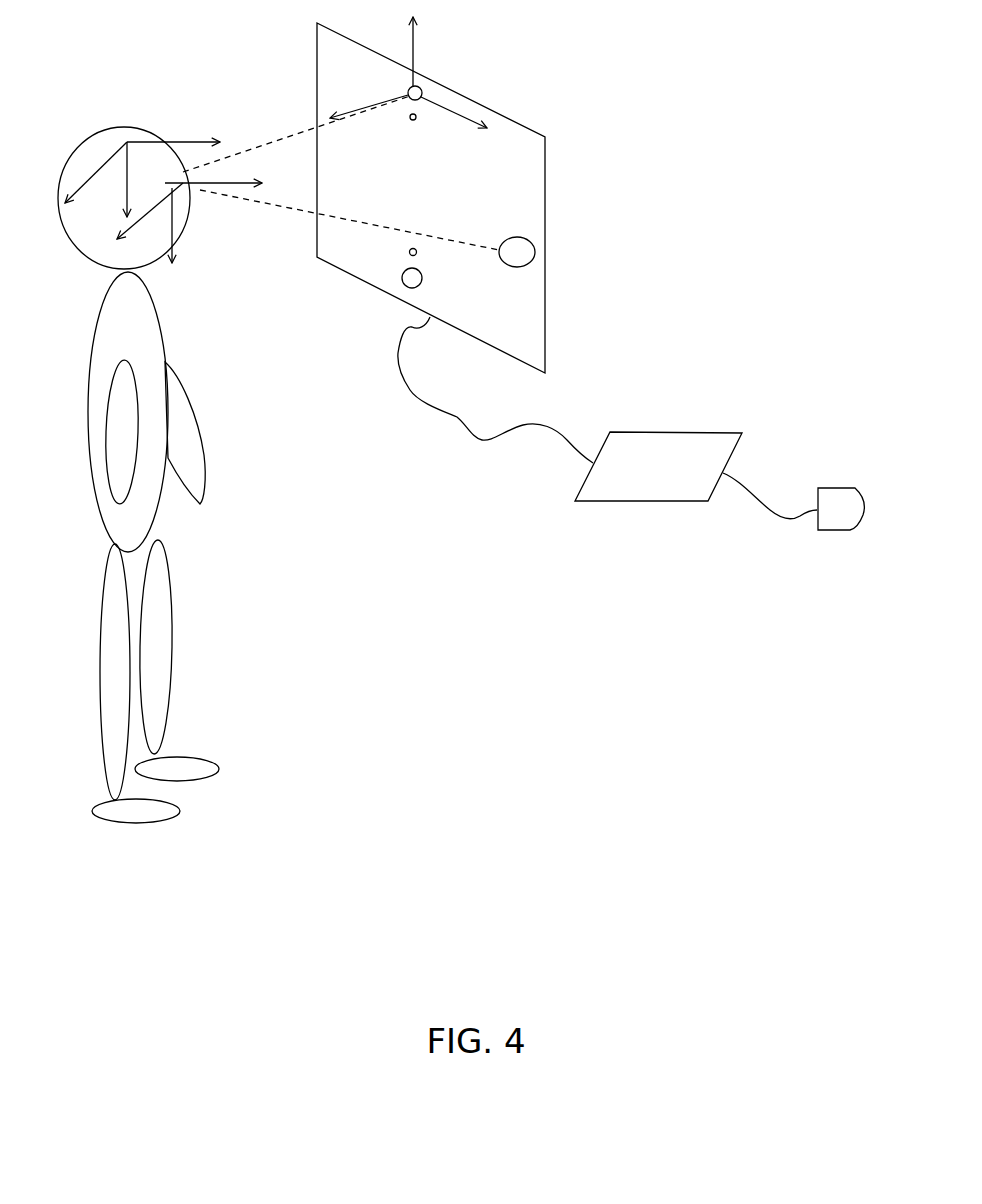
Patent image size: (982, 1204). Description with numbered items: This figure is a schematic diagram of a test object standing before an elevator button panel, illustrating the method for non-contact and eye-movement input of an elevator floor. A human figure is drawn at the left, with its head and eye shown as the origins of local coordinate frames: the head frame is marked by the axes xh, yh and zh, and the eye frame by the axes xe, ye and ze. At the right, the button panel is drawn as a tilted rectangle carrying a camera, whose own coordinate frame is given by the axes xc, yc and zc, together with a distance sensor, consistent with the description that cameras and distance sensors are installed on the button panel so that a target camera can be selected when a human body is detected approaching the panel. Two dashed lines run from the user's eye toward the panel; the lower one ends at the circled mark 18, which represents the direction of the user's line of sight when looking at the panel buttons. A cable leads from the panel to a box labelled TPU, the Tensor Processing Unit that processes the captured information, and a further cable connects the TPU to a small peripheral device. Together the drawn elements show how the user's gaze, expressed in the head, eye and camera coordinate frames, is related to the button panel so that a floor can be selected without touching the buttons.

The direction of the user's line of sight 18 is at (517, 252).
The head coordinate x axis xh is at (77, 172).
The head coordinate y axis yh is at (108, 180).
The head coordinate z axis zh is at (173, 118).
The eye coordinate x axis xe is at (150, 224).
The eye coordinate y axis ye is at (191, 247).
The eye coordinate z axis ze is at (226, 168).
The camera coordinate x axis xc is at (454, 132).
The camera coordinate y axis yc is at (369, 119).
The camera coordinate z axis zc is at (438, 51).
The tensor processing unit TPU is at (658, 466).